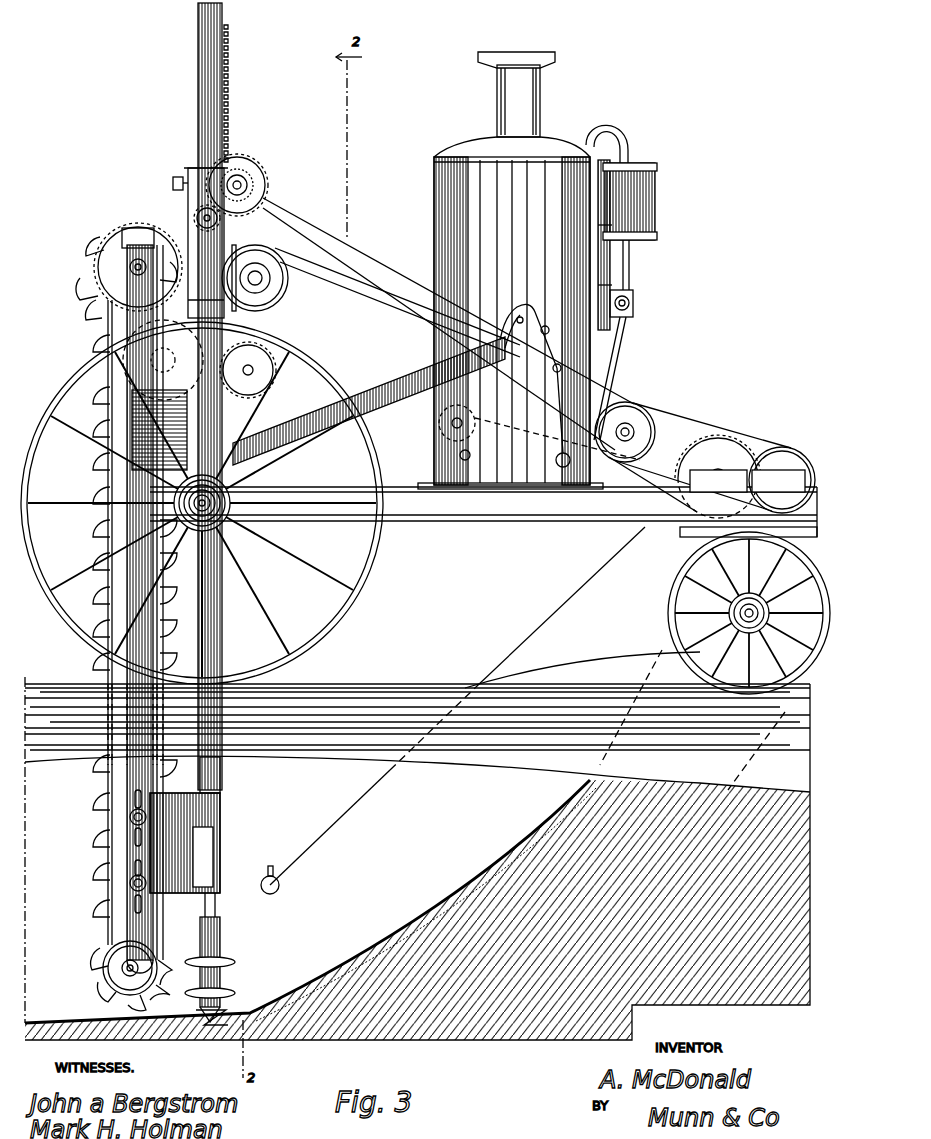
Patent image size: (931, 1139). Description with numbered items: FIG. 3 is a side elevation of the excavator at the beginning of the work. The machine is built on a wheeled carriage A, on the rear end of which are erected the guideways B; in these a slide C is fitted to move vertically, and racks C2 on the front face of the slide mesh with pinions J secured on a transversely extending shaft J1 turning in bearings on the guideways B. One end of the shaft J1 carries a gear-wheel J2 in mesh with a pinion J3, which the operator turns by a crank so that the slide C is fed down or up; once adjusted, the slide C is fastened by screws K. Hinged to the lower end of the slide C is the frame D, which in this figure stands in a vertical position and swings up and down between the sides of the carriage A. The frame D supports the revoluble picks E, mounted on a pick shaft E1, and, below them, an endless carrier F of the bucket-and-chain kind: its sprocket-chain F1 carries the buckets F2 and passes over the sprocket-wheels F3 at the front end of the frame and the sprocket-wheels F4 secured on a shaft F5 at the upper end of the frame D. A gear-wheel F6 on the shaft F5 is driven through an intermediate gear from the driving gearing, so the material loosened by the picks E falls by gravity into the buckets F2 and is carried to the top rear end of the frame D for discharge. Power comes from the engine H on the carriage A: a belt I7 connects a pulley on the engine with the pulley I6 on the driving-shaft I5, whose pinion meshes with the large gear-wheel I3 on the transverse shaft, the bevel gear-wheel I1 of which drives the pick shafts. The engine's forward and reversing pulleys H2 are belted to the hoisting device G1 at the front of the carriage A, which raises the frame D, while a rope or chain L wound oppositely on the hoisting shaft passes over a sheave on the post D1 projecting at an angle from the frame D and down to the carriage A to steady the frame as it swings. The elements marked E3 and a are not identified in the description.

The wheeled carriage A is at (483, 524).
The guideways B is at (188, 205).
The slide C is at (197, 95).
The racks C2 is at (246, 104).
The swinging frame D is at (183, 585).
The post D1 is at (410, 412).
The revoluble picks E is at (244, 950).
The pick shaft E1 is at (228, 774).
The auger point E3 is at (196, 1014).
The endless carrier F is at (135, 609).
The sprocket-chain F1 is at (100, 408).
The buckets F2 is at (100, 928).
The sprocket-wheels F3 is at (88, 318).
The sprocket-wheels F4 is at (85, 292).
The shaft F5 is at (120, 235).
The gear-wheel F6 is at (135, 228).
The hoisting device G1 is at (800, 428).
The engine H is at (637, 305).
The forward and reversing pulleys H2 is at (668, 388).
The bevel gear-wheel I1 is at (165, 362).
The large gear-wheel I3 is at (262, 385).
The driving-shaft I5 is at (272, 252).
The pulley I6 is at (285, 295).
The belt I7 is at (360, 357).
The pinions J is at (255, 170).
The shaft J1 is at (255, 192).
The gear-wheel J2 is at (255, 181).
The pinion J3 is at (220, 226).
The screws K is at (172, 181).
The steadying rope or chain L is at (548, 358).
The sounding line a is at (518, 650).